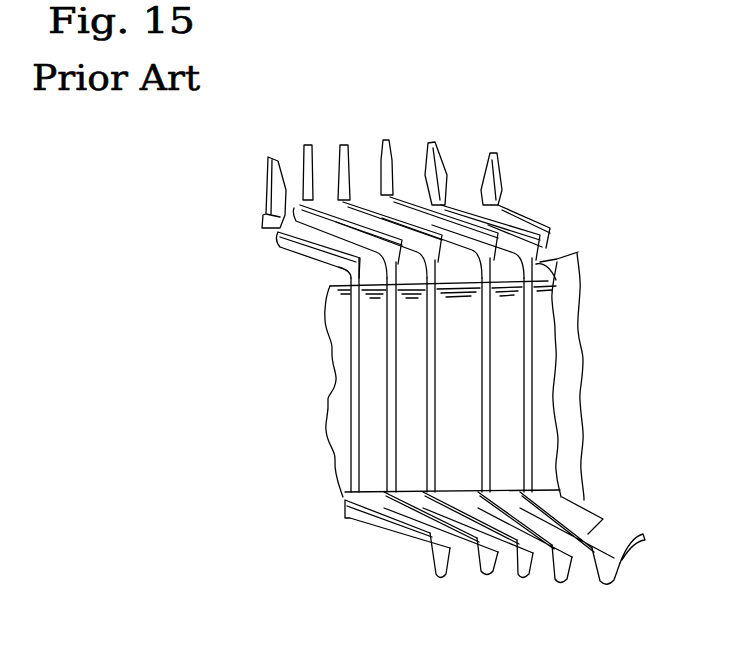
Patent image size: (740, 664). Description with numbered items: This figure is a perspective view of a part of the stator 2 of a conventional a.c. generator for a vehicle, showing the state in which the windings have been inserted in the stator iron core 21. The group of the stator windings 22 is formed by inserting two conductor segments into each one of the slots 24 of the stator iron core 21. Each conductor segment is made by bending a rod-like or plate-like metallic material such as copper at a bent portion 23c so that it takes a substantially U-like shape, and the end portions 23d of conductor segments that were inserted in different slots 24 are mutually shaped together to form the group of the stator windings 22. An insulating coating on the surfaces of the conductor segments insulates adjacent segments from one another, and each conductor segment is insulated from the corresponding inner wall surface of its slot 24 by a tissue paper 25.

The stator 2 is at (577, 214).
The stator iron core 21 is at (552, 395).
The group of stator windings 22 is at (453, 358).
The bent portion 23c is at (503, 573).
The end portions 23d is at (431, 178).
The slot 24 is at (540, 328).
The tissue paper 25 is at (577, 274).